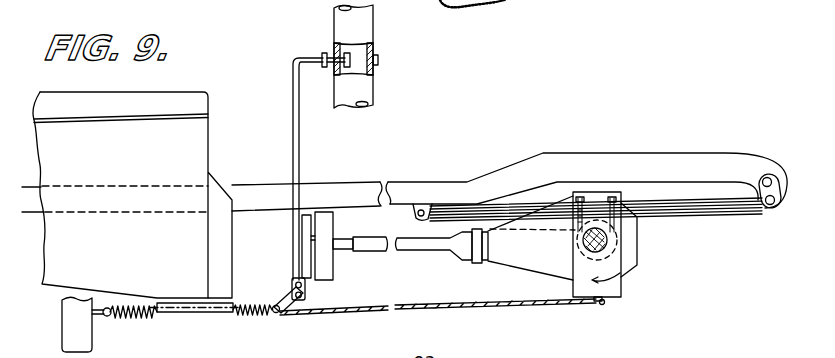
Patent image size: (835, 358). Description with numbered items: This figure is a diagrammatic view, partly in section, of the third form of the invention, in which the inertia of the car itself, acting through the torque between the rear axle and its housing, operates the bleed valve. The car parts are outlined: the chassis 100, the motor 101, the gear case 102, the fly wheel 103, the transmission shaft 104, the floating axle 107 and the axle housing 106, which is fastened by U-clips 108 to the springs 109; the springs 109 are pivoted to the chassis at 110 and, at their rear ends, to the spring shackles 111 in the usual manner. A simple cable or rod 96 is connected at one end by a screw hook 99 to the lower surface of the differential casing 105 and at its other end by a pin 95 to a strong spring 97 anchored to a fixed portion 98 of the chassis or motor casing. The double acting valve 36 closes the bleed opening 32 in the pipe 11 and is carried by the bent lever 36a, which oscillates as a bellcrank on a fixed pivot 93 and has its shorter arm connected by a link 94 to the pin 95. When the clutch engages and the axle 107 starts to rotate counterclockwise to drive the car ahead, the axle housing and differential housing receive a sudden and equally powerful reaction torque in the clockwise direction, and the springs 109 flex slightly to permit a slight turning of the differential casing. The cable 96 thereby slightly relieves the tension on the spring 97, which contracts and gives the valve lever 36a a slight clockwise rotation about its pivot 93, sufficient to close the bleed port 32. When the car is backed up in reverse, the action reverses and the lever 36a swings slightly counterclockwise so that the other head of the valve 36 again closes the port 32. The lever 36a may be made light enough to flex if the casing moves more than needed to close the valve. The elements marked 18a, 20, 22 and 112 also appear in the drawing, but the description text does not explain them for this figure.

The pipe 11 is at (367, 27).
The clamp band 18a is at (378, 58).
The hose 20 is at (465, 4).
The fitting 22 is at (510, 0).
The bleed opening 32 is at (333, 54).
The double acting valve 36 is at (332, 68).
The bent lever 36a is at (301, 133).
The fixed pivot 93 is at (295, 282).
The link 94 is at (290, 306).
The pin 95 is at (274, 306).
The cable or rod 96 is at (463, 304).
The strong spring 97 is at (190, 316).
The fixed portion 98 is at (98, 318).
The screw hook 99 is at (604, 304).
The chassis 100 is at (562, 163).
The motor 101 is at (197, 136).
The gear case 102 is at (260, 226).
The fly wheel 103 is at (333, 222).
The transmission shaft 104 is at (428, 247).
The differential casing 105 is at (637, 268).
The axle housing 106 is at (607, 236).
The floating axle 107 is at (612, 252).
The U-clips 108 is at (585, 215).
The springs 109 is at (664, 213).
The pivot 110 is at (423, 207).
The spring shackles 111 is at (786, 180).
The plate 112 is at (310, 258).